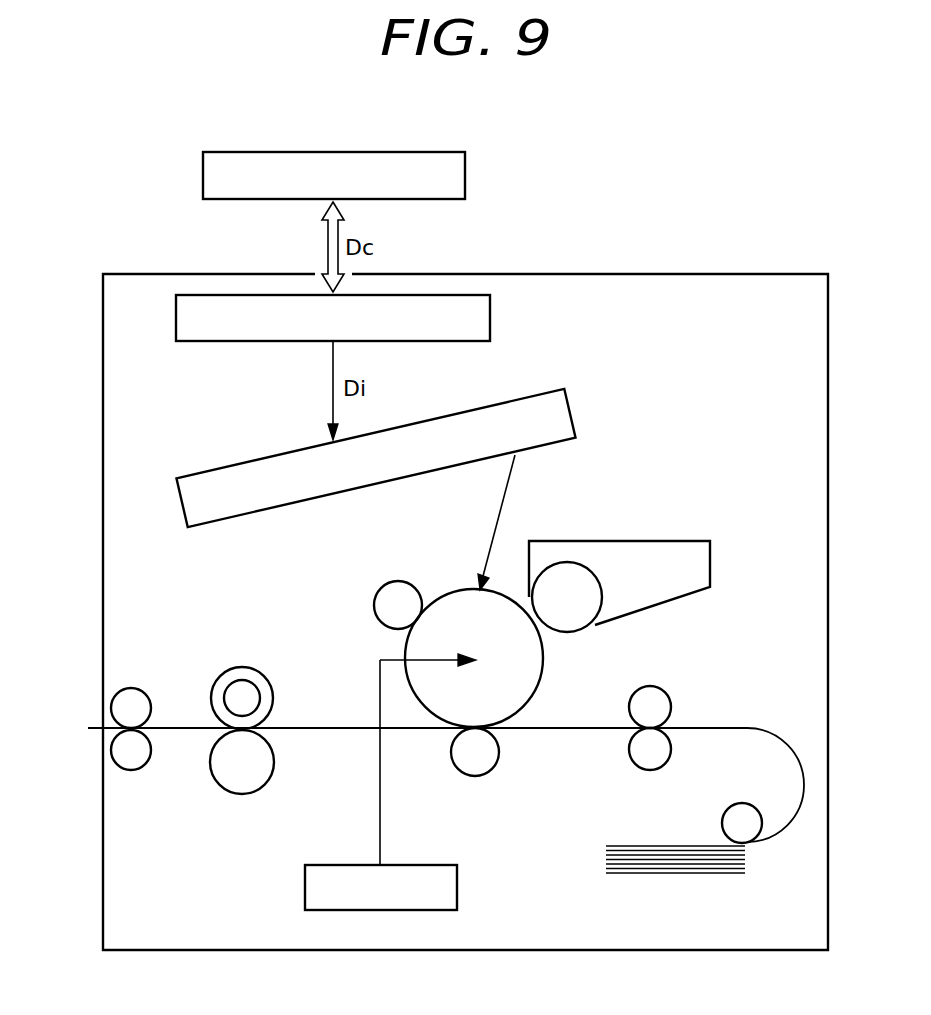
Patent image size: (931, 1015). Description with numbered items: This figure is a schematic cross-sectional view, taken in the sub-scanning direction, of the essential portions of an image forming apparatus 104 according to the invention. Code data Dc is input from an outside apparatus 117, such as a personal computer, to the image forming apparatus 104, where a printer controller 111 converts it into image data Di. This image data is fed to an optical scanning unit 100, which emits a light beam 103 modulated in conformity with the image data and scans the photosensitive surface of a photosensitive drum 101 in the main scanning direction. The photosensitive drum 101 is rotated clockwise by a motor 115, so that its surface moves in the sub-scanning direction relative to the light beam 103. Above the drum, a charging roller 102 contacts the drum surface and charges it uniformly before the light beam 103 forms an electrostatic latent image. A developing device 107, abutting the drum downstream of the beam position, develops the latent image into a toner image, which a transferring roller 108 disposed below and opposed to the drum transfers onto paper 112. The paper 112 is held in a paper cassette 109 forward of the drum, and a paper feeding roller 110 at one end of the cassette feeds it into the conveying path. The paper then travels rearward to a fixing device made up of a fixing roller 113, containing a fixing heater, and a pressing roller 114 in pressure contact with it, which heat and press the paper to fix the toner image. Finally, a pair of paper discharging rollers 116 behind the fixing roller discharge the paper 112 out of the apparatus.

The optical scanning unit 100 is at (228, 464).
The photosensitive drum 101 is at (537, 675).
The charging roller 102 is at (393, 588).
The light beam 103 is at (503, 507).
The image forming apparatus 104 is at (620, 273).
The developing device 107 is at (645, 548).
The transferring roller 108 is at (492, 750).
The paper cassette 109 is at (670, 876).
The paper feeding roller 110 is at (745, 808).
The printer controller 111 is at (492, 322).
The paper 112 is at (348, 727).
The fixing roller 113 is at (253, 677).
The pressing roller 114 is at (240, 785).
The motor 115 is at (418, 864).
The paper discharging rollers 116 is at (135, 700).
The outside apparatus 117 is at (432, 150).